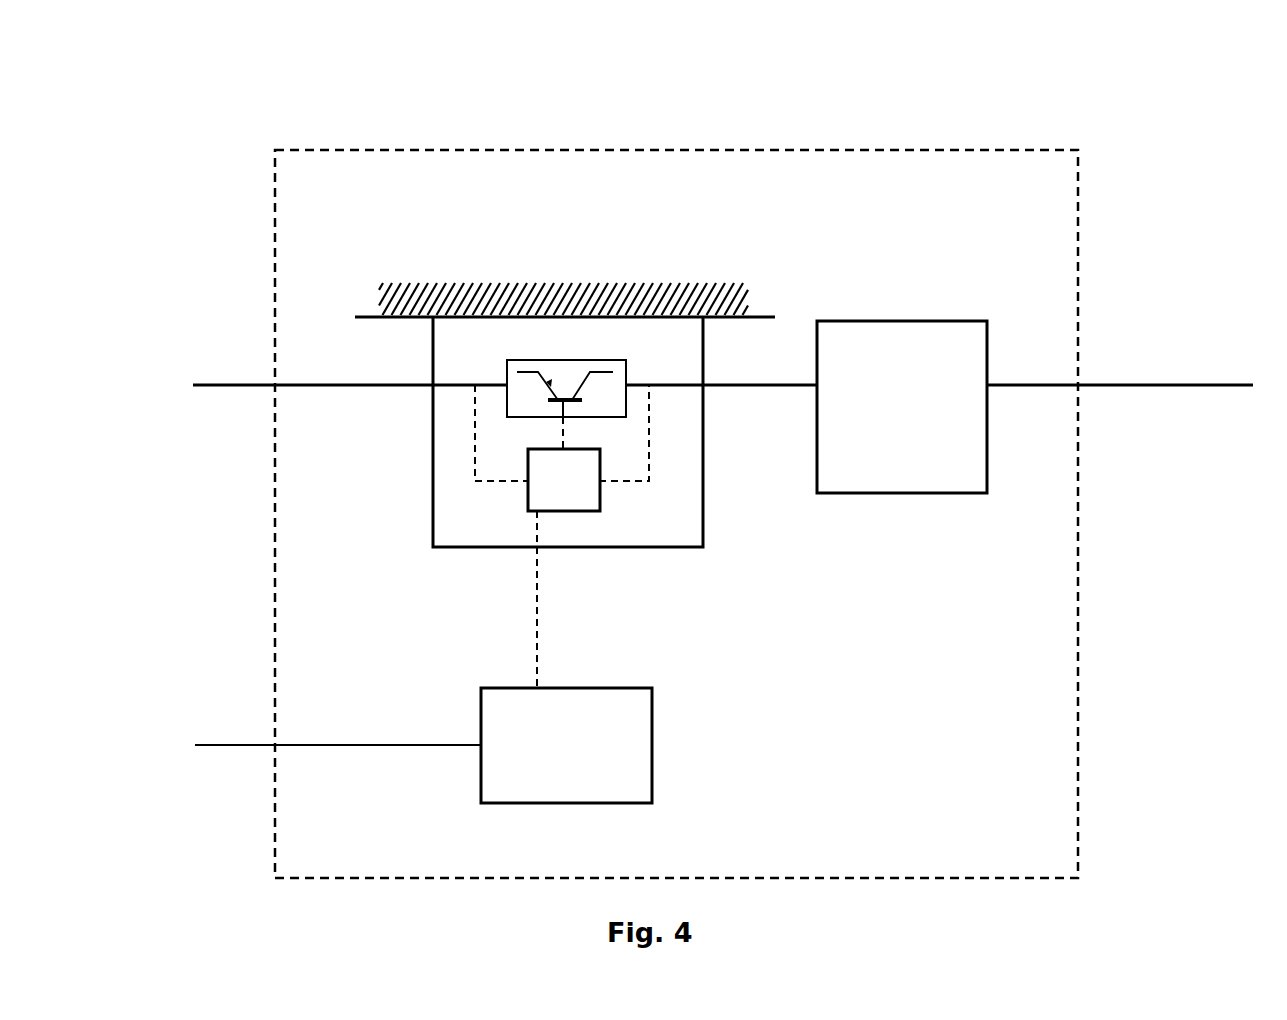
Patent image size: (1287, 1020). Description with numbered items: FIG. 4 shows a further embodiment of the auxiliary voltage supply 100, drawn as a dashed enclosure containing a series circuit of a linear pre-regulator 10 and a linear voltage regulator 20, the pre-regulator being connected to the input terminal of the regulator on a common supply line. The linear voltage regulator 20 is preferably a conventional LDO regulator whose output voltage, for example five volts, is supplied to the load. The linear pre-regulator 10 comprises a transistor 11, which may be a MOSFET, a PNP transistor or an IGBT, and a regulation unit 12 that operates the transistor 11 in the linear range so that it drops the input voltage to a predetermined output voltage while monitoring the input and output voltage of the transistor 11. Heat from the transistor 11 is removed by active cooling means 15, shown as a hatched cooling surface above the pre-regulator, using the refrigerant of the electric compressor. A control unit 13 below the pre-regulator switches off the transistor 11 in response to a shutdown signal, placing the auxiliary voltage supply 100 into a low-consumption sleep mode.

The auxiliary voltage supply 100 is at (785, 150).
The linear pre-regulator 10 is at (703, 511).
The transistor 11 is at (507, 405).
The regulation unit 12 is at (562, 511).
The control unit 13 is at (652, 732).
The active cooling means 15 is at (597, 282).
The linear voltage regulator 20 is at (885, 320).